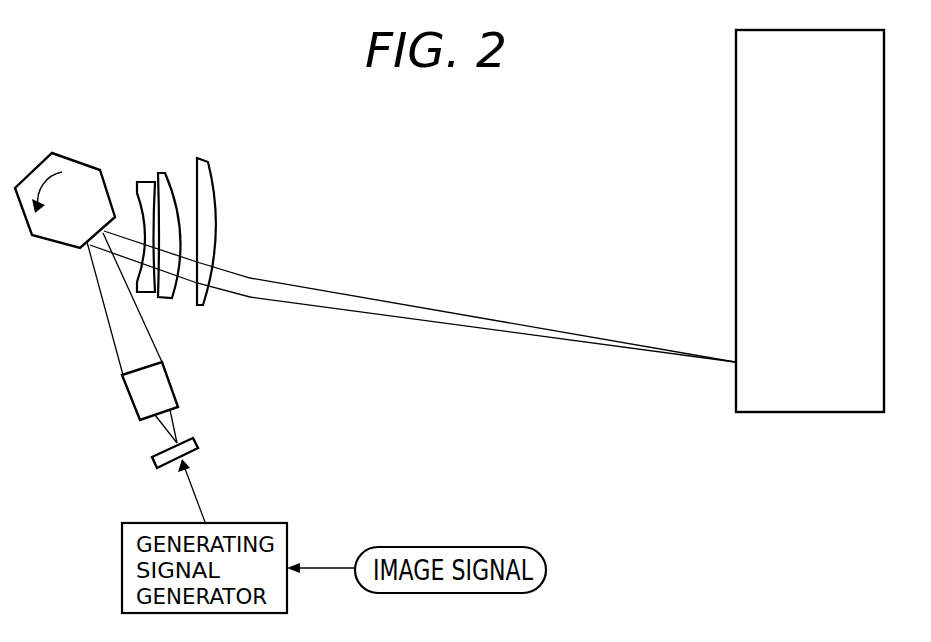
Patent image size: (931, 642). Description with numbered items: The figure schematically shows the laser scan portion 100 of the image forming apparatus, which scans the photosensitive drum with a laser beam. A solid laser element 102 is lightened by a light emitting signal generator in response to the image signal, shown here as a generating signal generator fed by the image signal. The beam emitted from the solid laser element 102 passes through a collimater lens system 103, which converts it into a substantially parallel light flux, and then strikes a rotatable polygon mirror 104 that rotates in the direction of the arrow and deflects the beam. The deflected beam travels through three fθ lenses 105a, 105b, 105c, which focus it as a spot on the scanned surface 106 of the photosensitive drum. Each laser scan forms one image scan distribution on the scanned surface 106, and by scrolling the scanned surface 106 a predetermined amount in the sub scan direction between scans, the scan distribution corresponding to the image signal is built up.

The laser scan portion 100 is at (199, 140).
The solid laser element 102 is at (198, 442).
The collimater lens system 103 is at (170, 387).
The rotatable polygon mirror 104 is at (50, 241).
The fθ lens 105a is at (145, 177).
The fθ lens 105b is at (165, 172).
The fθ lens 105c is at (217, 178).
The scanned surface 106 is at (736, 53).